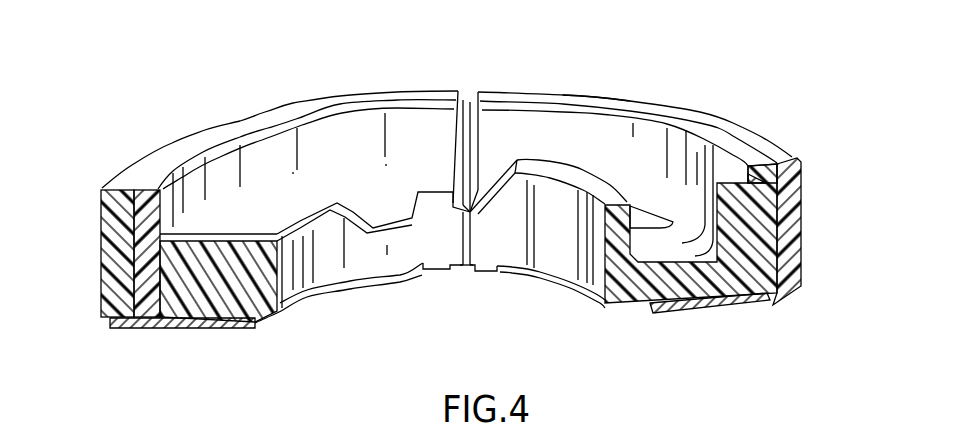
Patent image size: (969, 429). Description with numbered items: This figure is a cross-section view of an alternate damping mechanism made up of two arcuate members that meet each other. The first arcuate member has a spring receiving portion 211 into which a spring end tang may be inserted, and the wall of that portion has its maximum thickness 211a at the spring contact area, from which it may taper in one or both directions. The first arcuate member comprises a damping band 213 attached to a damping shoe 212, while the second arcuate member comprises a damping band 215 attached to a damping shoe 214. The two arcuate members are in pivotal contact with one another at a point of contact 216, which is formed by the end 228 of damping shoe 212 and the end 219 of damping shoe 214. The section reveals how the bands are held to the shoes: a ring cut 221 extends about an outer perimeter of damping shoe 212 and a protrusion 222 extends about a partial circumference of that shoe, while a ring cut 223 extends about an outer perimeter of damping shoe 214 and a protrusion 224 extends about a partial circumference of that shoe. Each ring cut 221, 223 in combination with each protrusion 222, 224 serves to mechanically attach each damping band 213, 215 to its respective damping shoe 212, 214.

The spring receiving portion 211 is at (648, 196).
The wall of maximum thickness 211a is at (721, 167).
The damping shoe 212 is at (787, 297).
The damping band 213 is at (568, 93).
The damping shoe 214 is at (340, 147).
The damping band 215 is at (102, 240).
The point of contact 216 is at (463, 280).
The end of damping shoe 219 is at (462, 240).
The ring cut 221 is at (768, 168).
The protrusion 222 is at (766, 306).
The ring cut 223 is at (140, 198).
The protrusion 224 is at (155, 332).
The end of damping shoe 228 is at (472, 240).